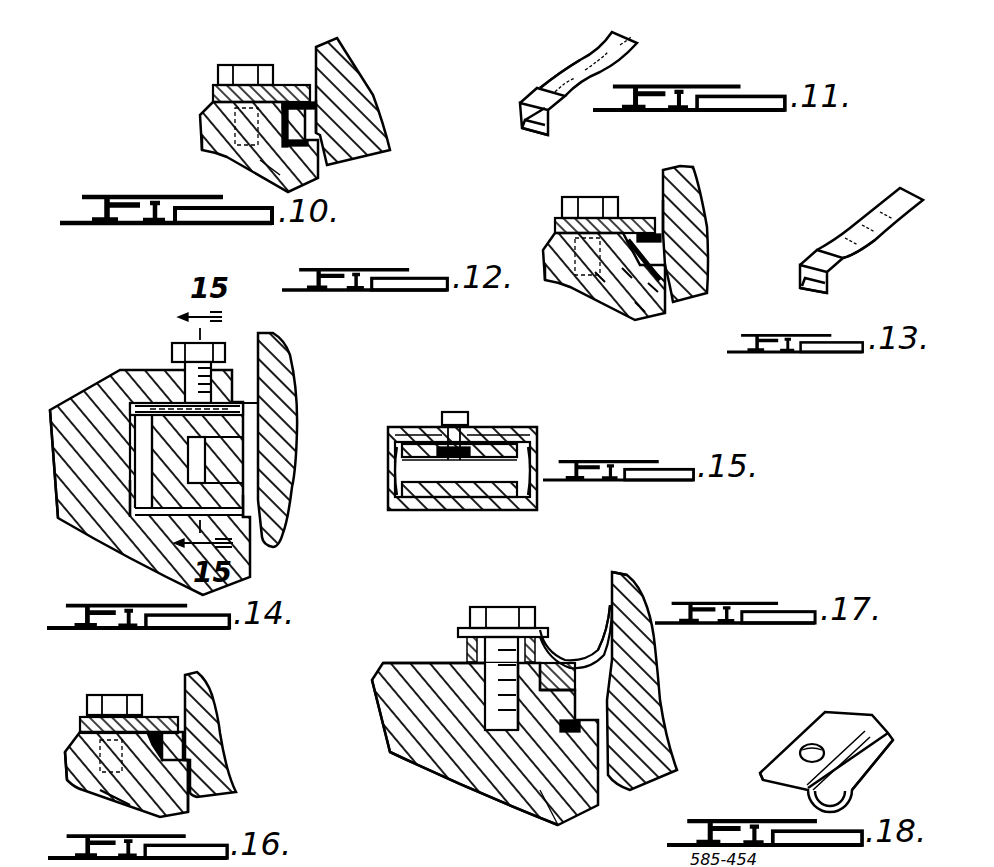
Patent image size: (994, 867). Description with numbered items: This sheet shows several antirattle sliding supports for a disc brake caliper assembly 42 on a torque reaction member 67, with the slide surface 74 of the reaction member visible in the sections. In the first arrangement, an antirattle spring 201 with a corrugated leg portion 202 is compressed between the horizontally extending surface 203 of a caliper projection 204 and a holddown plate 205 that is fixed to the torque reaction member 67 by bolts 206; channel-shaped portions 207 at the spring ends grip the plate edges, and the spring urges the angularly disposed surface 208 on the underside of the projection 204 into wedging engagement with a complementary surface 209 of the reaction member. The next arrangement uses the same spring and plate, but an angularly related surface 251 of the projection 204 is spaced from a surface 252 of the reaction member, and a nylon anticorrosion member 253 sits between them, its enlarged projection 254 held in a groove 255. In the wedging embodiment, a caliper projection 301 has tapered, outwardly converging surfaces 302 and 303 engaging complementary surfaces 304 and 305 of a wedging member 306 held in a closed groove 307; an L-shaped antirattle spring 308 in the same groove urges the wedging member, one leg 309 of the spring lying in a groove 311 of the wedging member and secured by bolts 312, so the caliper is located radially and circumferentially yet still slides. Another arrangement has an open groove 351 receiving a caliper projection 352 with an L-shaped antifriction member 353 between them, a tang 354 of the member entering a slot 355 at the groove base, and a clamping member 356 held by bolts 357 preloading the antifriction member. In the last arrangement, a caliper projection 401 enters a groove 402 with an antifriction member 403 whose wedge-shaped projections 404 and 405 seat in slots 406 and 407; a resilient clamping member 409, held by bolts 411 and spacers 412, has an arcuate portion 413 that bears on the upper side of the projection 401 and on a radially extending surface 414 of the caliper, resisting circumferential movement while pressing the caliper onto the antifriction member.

In FIG. 10, the caliper assembly 42 is at (350, 47).
In FIG. 12, the caliper assembly 42 is at (695, 167).
In FIG. 14, the caliper assembly 42 is at (282, 348).
In FIG. 16, the caliper assembly 42 is at (220, 675).
In FIG. 17, the caliper assembly 42 is at (640, 592).
In FIG. 10, the torque reaction member 67 is at (200, 125).
In FIG. 12, the torque reaction member 67 is at (545, 253).
In FIG. 14, the torque reaction member 67 is at (103, 380).
In FIG. 15, the torque reaction member 67 is at (488, 422).
In FIG. 16, the torque reaction member 67 is at (67, 737).
In FIG. 17, the torque reaction member 67 is at (437, 738).
In FIG. 10, the slide surface 74 is at (203, 142).
In FIG. 12, the slide surface 74 is at (550, 283).
In FIG. 14, the slide surface 74 is at (92, 403).
In FIG. 17, the slide surface 74 is at (392, 717).
In FIG. 10, the antirattle spring 201 is at (323, 98).
In FIG. 11, the antirattle spring 201 is at (638, 43).
In FIG. 12, the antirattle spring 201 is at (663, 228).
In FIG. 13, the antirattle spring 201 is at (855, 227).
In FIG. 11, the corrugated leg portion 202 is at (607, 70).
In FIG. 13, the corrugated leg portion 202 is at (867, 252).
In FIG. 10, the horizontally extending surface 203 is at (297, 103).
In FIG. 12, the horizontally extending surface 203 is at (645, 232).
In FIG. 10, the projection 204 is at (293, 108).
In FIG. 12, the projection 204 is at (640, 253).
In FIG. 10, the holddown plate 205 is at (213, 92).
In FIG. 12, the holddown plate 205 is at (557, 222).
In FIG. 10, the bolts 206 is at (242, 65).
In FIG. 12, the bolts 206 is at (593, 180).
In FIG. 11, the channel-shaped portions 207 is at (532, 117).
In FIG. 13, the channel-shaped portions 207 is at (810, 297).
In FIG. 10, the angularly disposed surface 208 is at (303, 143).
In FIG. 10, the complementary surface 209 is at (267, 157).
In FIG. 12, the angularly related surface 251 is at (653, 287).
In FIG. 12, the surface 252 is at (627, 273).
In FIG. 12, the anticorrosion member 253 is at (660, 277).
In FIG. 12, the enlarged projection 254 is at (640, 307).
In FIG. 12, the groove 255 is at (600, 277).
In FIG. 14, the projection 301 is at (235, 455).
In FIG. 14, the tapered surface 302 is at (235, 408).
In FIG. 14, the tapered surface 303 is at (243, 503).
In FIG. 14, the complementary surface 304 is at (243, 420).
In FIG. 14, the complementary surface 305 is at (243, 483).
In FIG. 14, the wedging member 306 is at (167, 517).
In FIG. 15, the wedging member 306 is at (517, 440).
In FIG. 14, the closed groove 307 is at (135, 418).
In FIG. 15, the closed groove 307 is at (500, 450).
In FIG. 14, the antirattle spring 308 is at (127, 487).
In FIG. 14, the leg 309 is at (273, 397).
In FIG. 15, the leg 309 is at (435, 432).
In FIG. 15, the groove 311 is at (462, 487).
In FIG. 14, the bolts 312 is at (173, 358).
In FIG. 15, the bolts 312 is at (458, 412).
In FIG. 16, the open-type groove 351 is at (167, 757).
In FIG. 16, the projection 352 is at (173, 740).
In FIG. 16, the antifriction member 353 is at (98, 777).
In FIG. 16, the tang 354 is at (192, 798).
In FIG. 16, the slot 355 is at (120, 789).
In FIG. 16, the clamping member 356 is at (155, 730).
In FIG. 16, the bolts 357 is at (108, 695).
In FIG. 17, the projection 401 is at (567, 697).
In FIG. 17, the groove 402 is at (452, 810).
In FIG. 17, the antifriction member 403 is at (562, 678).
In FIG. 17, the wedge-shaped projection 404 is at (487, 687).
In FIG. 17, the wedge-shaped projection 405 is at (577, 730).
In FIG. 17, the slot 406 is at (507, 728).
In FIG. 17, the slot 407 is at (533, 810).
In FIG. 17, the resilient clamping member 409 is at (542, 627).
In FIG. 18, the resilient clamping member 409 is at (830, 717).
In FIG. 17, the bolts 411 is at (472, 612).
In FIG. 17, the spacers 412 is at (463, 650).
In FIG. 17, the arcuate portion 413 is at (607, 652).
In FIG. 18, the arcuate portion 413 is at (862, 782).
In FIG. 17, the radially extending surface 414 is at (603, 573).